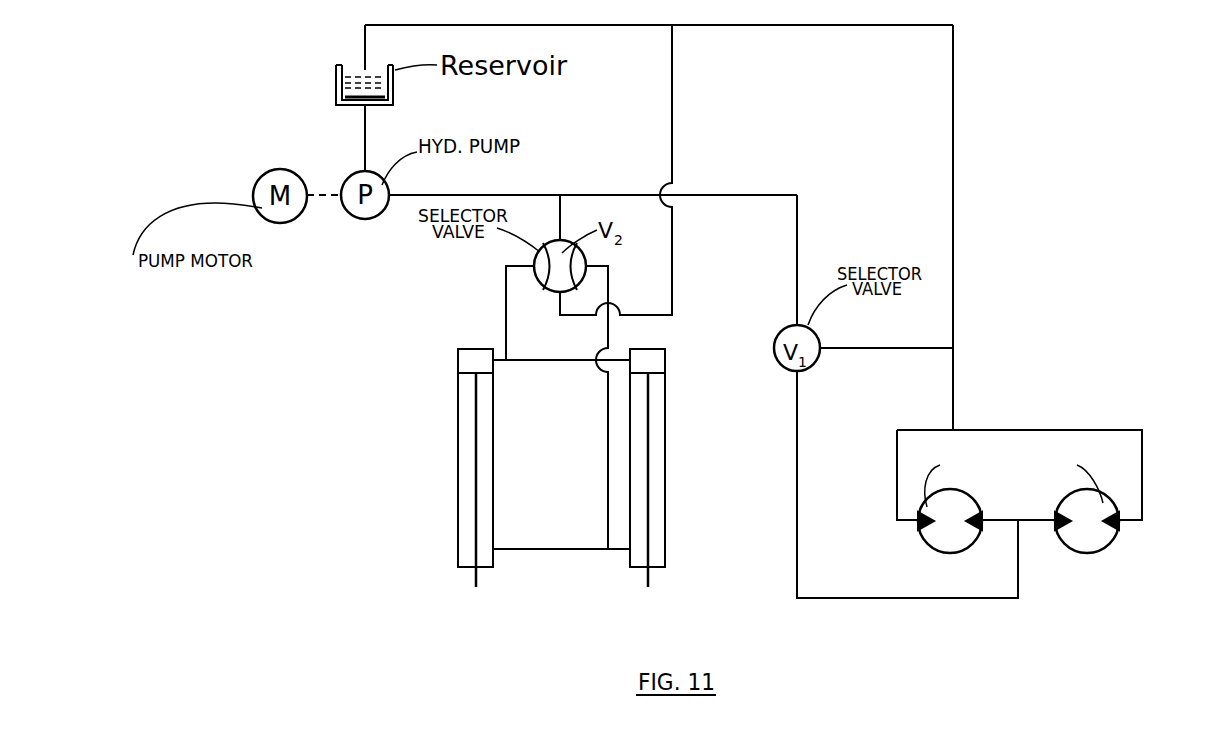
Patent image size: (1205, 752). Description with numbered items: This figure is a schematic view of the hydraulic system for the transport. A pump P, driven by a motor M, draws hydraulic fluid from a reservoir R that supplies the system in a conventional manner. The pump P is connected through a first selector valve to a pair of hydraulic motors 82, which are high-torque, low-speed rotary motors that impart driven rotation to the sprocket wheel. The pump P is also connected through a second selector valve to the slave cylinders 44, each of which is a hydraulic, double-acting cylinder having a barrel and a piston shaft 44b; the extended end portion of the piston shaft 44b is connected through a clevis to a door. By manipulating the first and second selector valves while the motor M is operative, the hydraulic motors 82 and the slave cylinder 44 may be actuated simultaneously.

The slave cylinder 44 is at (493, 442).
The piston shaft 44b is at (477, 573).
The hydraulic motors 82 is at (935, 538).